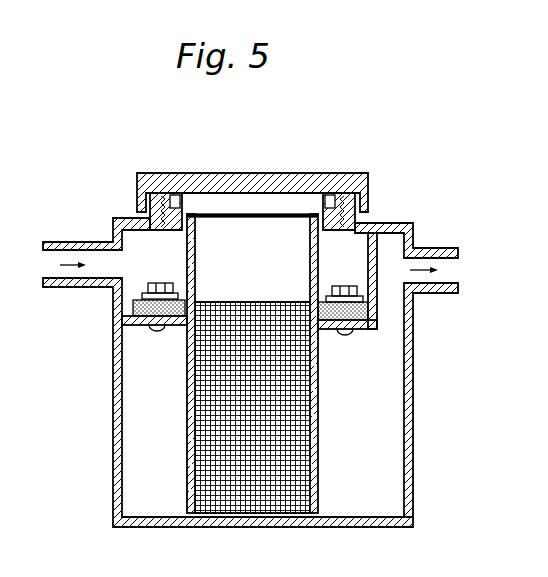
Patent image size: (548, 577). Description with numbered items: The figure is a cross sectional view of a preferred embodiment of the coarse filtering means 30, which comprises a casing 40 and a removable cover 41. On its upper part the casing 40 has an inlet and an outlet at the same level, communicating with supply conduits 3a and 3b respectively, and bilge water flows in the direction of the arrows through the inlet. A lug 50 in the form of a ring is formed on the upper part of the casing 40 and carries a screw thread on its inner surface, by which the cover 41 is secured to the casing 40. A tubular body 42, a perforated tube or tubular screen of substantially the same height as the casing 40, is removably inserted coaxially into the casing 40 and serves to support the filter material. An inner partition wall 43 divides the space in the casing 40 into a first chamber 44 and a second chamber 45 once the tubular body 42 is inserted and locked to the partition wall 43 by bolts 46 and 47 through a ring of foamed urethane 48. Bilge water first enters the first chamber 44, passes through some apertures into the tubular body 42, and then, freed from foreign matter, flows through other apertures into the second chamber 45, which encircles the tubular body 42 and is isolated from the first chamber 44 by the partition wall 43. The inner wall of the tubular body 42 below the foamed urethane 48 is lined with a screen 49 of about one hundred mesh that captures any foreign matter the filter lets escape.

The coarse filtering means 30 is at (245, 135).
The casing 40 is at (113, 440).
The removable cover 41 is at (311, 176).
The tubular body 42 is at (318, 492).
The inner partition wall 43 is at (138, 328).
The first chamber 44 is at (130, 243).
The second chamber 45 is at (152, 503).
The bolt 46 is at (157, 284).
The bolt 47 is at (343, 286).
The foamed urethane 48 is at (133, 308).
The screen 49 is at (261, 505).
The lug 50 is at (354, 221).
The supply conduit 3a is at (70, 283).
The supply conduit 3b is at (447, 248).